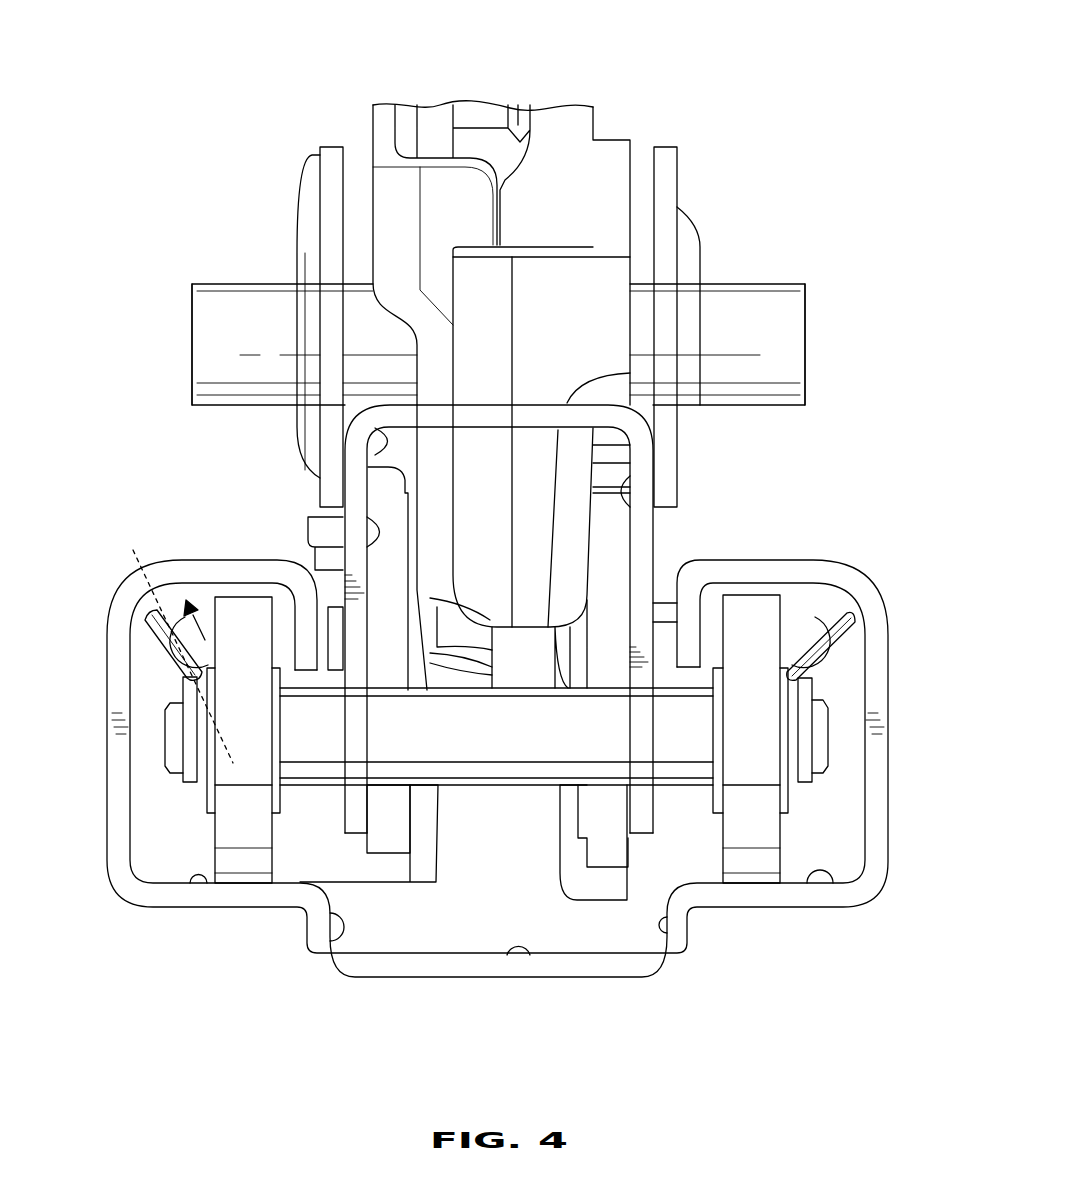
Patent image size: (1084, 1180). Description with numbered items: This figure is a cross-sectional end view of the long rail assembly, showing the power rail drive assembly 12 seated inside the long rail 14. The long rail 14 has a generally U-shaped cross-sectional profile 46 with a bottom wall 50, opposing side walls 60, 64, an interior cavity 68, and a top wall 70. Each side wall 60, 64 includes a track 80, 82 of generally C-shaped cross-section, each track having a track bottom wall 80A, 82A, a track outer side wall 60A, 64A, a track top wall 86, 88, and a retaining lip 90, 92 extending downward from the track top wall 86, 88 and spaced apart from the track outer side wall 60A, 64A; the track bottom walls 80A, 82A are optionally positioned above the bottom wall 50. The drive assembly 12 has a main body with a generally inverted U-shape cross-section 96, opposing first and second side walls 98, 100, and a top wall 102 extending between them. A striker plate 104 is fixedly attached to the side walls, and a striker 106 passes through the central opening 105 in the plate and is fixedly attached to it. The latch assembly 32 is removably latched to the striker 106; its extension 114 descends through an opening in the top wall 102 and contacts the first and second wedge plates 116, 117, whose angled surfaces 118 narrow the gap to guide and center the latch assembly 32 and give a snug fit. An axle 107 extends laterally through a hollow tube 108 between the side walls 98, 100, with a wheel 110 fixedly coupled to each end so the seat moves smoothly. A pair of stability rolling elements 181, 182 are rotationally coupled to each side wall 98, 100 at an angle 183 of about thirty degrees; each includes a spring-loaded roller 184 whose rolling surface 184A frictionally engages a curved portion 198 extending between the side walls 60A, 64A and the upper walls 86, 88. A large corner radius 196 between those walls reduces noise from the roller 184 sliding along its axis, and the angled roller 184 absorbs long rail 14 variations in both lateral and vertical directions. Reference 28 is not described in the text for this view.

The power rail drive assembly 12 is at (670, 553).
The long rail 14 is at (882, 896).
The body 28 is at (498, 207).
The latch assembly 32 is at (373, 128).
The U-shaped cross-sectional profile 46 is at (173, 597).
The bottom wall 50 is at (528, 950).
The side wall 60 is at (348, 912).
The track outer side wall 60A is at (130, 745).
The side wall 64 is at (687, 928).
The track outer side wall 64A is at (866, 740).
The interior cavity 68 is at (468, 908).
The top wall 70 is at (222, 600).
The track 80 is at (163, 838).
The track bottom wall 80A is at (206, 872).
The track 82 is at (815, 808).
The track bottom wall 82A is at (807, 868).
The track top wall 86 is at (208, 620).
The track top wall 88 is at (793, 600).
The retaining lip 90 is at (328, 600).
The retaining lip 92 is at (690, 590).
The inverted U-shape cross-section 96 is at (655, 530).
The first side wall 98 is at (617, 478).
The second side wall 100 is at (365, 519).
The top wall 102 is at (375, 453).
The second striker plate 104 is at (320, 235).
The central opening 105 is at (683, 233).
The striker 106 is at (215, 335).
The axle 107 is at (200, 775).
The hollow tube 108 is at (510, 740).
The wheel 110 is at (212, 849).
The extension 114 is at (537, 462).
The first wedge plate 116 is at (548, 852).
The second wedge plate 117 is at (393, 857).
The angled surface 118 is at (455, 840).
The stability rolling element 181 is at (853, 623).
The stability rolling element 182 is at (153, 602).
The angle 183 is at (233, 740).
The roller 184 is at (143, 621).
The rolling surface 184A is at (157, 603).
The corner radius 196 is at (213, 628).
The curved portion 198 is at (816, 598).